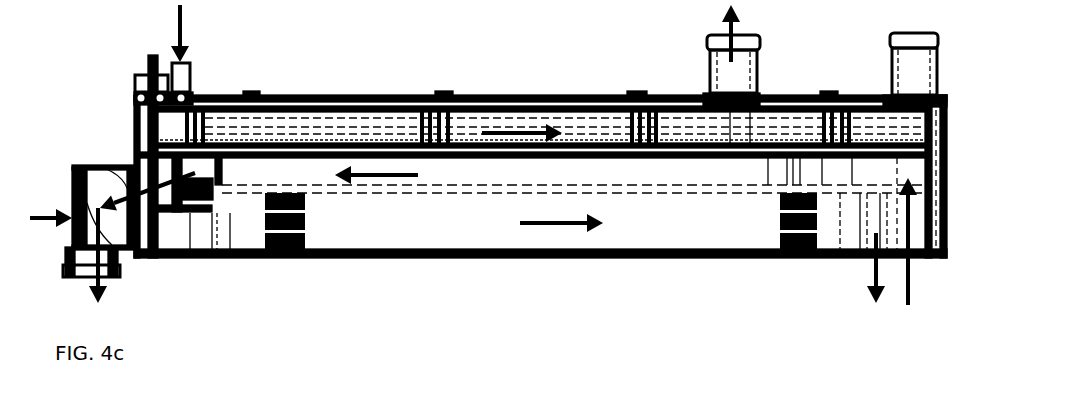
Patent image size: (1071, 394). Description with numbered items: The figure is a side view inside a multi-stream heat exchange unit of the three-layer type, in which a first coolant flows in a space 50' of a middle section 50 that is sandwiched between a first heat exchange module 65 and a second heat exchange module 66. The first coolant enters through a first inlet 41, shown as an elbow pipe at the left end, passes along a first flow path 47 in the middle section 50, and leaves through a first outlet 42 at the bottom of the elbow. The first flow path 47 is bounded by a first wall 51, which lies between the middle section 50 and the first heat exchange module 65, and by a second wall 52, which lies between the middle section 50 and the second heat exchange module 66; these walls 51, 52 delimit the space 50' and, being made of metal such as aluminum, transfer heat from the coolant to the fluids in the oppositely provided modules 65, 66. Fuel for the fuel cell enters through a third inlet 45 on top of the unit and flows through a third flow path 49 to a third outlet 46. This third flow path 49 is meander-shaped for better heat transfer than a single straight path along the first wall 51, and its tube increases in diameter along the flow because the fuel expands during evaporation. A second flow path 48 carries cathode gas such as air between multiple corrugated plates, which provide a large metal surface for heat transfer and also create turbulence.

The first inlet 41 is at (80, 166).
The first outlet 42 is at (112, 275).
The third inlet 45 is at (192, 90).
The third outlet 46 is at (708, 42).
The first flow path 47 is at (378, 173).
The second flow path 48 is at (562, 232).
The third flow path 49 is at (528, 135).
The middle section 50 is at (681, 247).
The space 50' is at (202, 246).
The first wall 51 is at (640, 153).
The second wall 52 is at (708, 190).
The first heat exchange module 65 is at (380, 100).
The second heat exchange module 66 is at (335, 240).